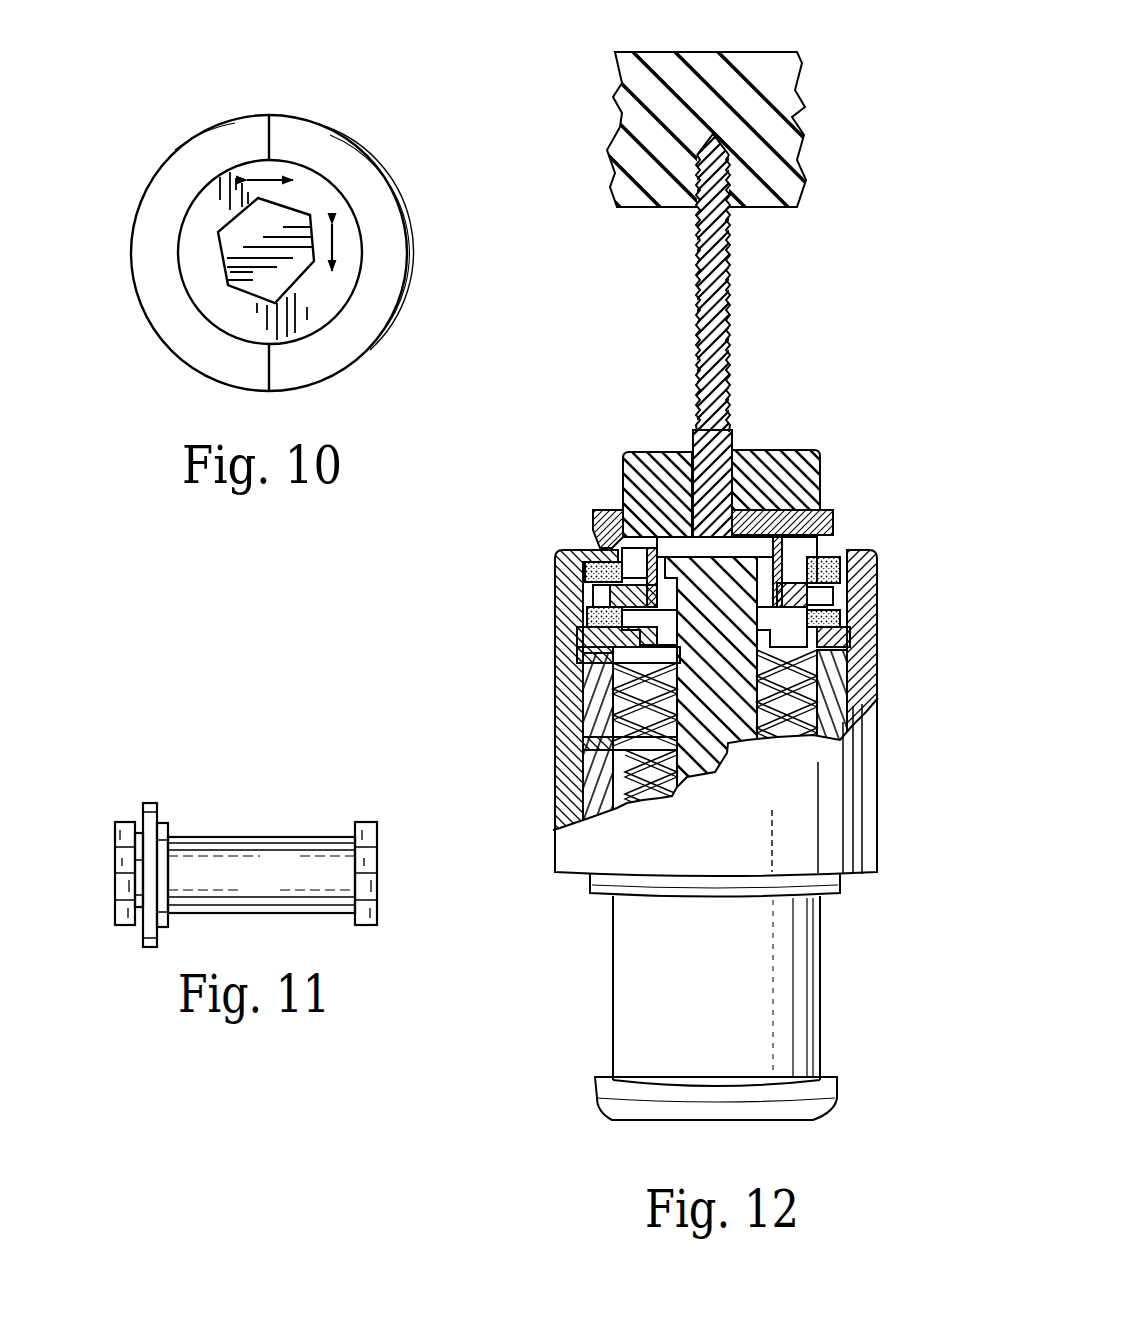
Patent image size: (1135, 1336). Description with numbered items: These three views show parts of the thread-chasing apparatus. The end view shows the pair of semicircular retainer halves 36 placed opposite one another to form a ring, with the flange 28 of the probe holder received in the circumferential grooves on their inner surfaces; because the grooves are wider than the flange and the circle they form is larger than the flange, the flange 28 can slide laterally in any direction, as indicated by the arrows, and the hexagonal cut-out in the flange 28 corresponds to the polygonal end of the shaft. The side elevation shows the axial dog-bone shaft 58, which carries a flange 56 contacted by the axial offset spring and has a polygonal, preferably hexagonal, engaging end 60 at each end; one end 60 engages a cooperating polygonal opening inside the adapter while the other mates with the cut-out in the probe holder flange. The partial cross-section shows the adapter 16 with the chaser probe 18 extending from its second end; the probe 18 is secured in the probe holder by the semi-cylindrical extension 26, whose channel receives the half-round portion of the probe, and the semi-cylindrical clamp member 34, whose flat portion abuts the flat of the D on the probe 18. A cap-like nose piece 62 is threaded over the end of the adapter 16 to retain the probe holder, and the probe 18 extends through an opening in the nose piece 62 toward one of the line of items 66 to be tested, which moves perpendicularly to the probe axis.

In FIG. 12, the adapter 16 is at (540, 565).
In FIG. 12, the chaser probe 18 is at (732, 260).
In FIG. 12, the semi-cylindrical extension 26 is at (655, 452).
In FIG. 10, the flange 28 is at (203, 273).
In FIG. 12, the semi-cylindrical clamp member 34 is at (783, 450).
In FIG. 10, the retainer halves 36 is at (158, 187).
In FIG. 11, the flange 56 is at (152, 803).
In FIG. 11, the dog-bone shaft 58 is at (258, 837).
In FIG. 11, the end of the dog-bone shaft 60 is at (115, 863).
In FIG. 12, the nose piece 62 is at (696, 824).
In FIG. 12, the items to be tested 66 is at (807, 72).